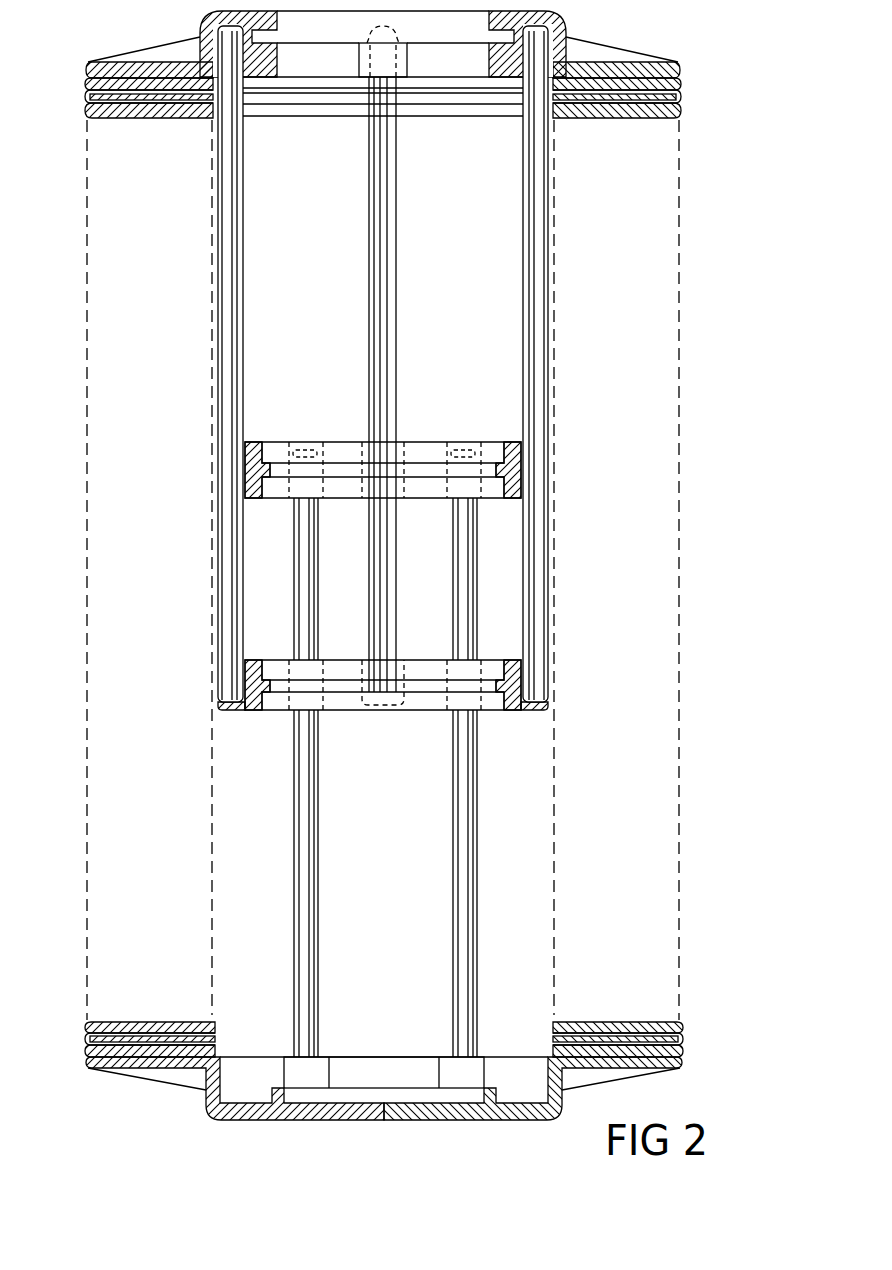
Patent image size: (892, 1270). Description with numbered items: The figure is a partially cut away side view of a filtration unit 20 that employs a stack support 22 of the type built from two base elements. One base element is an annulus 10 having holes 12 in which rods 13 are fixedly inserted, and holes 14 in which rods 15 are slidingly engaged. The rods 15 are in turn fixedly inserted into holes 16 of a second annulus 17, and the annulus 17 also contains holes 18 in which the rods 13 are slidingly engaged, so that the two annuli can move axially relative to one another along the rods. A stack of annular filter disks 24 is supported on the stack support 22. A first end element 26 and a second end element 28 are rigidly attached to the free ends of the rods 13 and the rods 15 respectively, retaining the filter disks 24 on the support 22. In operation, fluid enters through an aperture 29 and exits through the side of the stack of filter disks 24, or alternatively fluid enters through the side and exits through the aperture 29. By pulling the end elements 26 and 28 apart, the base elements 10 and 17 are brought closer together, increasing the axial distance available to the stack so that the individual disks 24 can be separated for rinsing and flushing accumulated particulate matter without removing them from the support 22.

The annulus 10 is at (427, 452).
The holes 12 is at (295, 448).
The rods 13 is at (318, 873).
The holes 14 is at (398, 443).
The rods 15 is at (243, 323).
The holes 16 is at (397, 662).
The annulus 17 is at (422, 697).
The holes 18 is at (317, 658).
The filtration unit 20 is at (693, 267).
The stack support 22 is at (561, 267).
The annular filter disks 24 is at (674, 106).
The first end element 26 is at (122, 1068).
The second end element 28 is at (657, 72).
The aperture 29 is at (381, 1068).